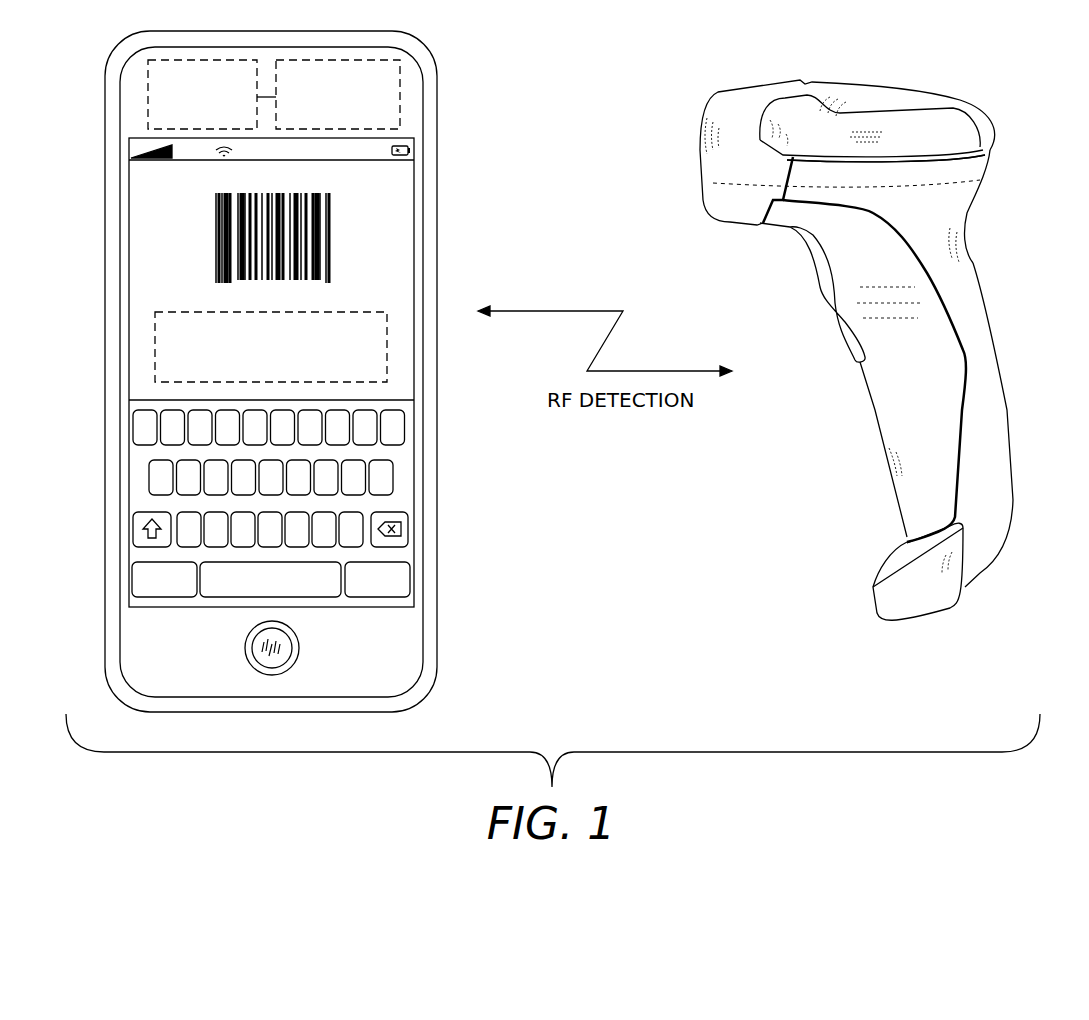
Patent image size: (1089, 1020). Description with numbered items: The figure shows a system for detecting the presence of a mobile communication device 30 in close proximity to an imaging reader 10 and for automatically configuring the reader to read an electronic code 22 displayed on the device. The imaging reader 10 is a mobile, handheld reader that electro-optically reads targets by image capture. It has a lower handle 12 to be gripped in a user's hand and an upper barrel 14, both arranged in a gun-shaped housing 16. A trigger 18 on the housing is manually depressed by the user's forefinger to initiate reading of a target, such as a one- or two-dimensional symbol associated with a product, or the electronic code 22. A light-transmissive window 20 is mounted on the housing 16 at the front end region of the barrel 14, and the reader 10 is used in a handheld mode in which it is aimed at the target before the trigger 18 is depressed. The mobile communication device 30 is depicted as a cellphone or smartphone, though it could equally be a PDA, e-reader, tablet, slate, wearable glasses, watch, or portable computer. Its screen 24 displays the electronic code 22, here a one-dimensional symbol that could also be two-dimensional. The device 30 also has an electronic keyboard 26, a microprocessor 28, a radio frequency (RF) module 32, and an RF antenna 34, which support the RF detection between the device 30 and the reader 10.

The imaging reader 10 is at (857, 340).
The lower handle 12 is at (1003, 397).
The upper barrel 14 is at (873, 92).
The gun-shaped housing 16 is at (992, 131).
The trigger 18 is at (832, 298).
The light-transmissive window 20 is at (697, 135).
The electronic code 22 is at (207, 240).
The screen 24 is at (147, 278).
The electronic keyboard 26 is at (97, 412).
The microprocessor 28 is at (155, 345).
The mobile communication device 30 is at (276, 371).
The radio frequency (RF) module 32 is at (148, 100).
The RF antenna 34 is at (400, 97).